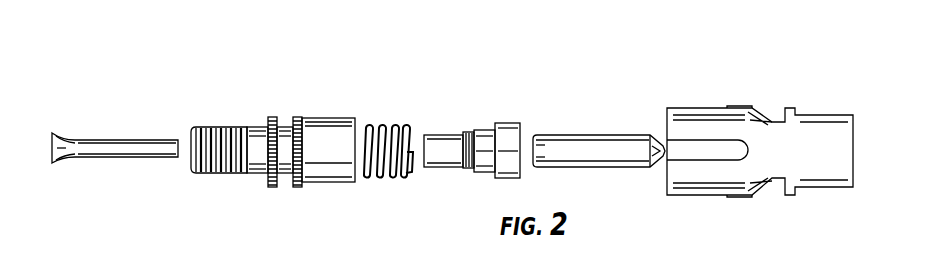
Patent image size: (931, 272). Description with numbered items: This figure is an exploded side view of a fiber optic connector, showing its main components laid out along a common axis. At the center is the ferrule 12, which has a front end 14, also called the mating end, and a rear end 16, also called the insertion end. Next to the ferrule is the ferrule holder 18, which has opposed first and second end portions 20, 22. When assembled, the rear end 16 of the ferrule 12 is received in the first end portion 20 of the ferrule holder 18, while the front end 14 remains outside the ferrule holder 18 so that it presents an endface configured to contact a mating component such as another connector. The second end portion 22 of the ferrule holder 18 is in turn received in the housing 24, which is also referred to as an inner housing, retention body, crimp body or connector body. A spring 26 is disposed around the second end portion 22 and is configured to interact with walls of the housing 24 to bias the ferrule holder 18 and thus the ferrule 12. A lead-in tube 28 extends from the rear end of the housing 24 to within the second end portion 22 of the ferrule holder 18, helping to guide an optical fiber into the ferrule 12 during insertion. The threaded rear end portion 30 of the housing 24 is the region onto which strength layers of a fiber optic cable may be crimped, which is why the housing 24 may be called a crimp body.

The ferrule 12 is at (594, 120).
The front end 14 is at (663, 146).
The rear end 16 is at (534, 135).
The ferrule holder 18 is at (465, 132).
The first end portion 20 is at (503, 123).
The second end portion 22 is at (433, 135).
The housing 24 is at (283, 116).
The spring 26 is at (387, 178).
The lead-in tube 28 is at (118, 139).
The rear end portion 30 is at (267, 125).